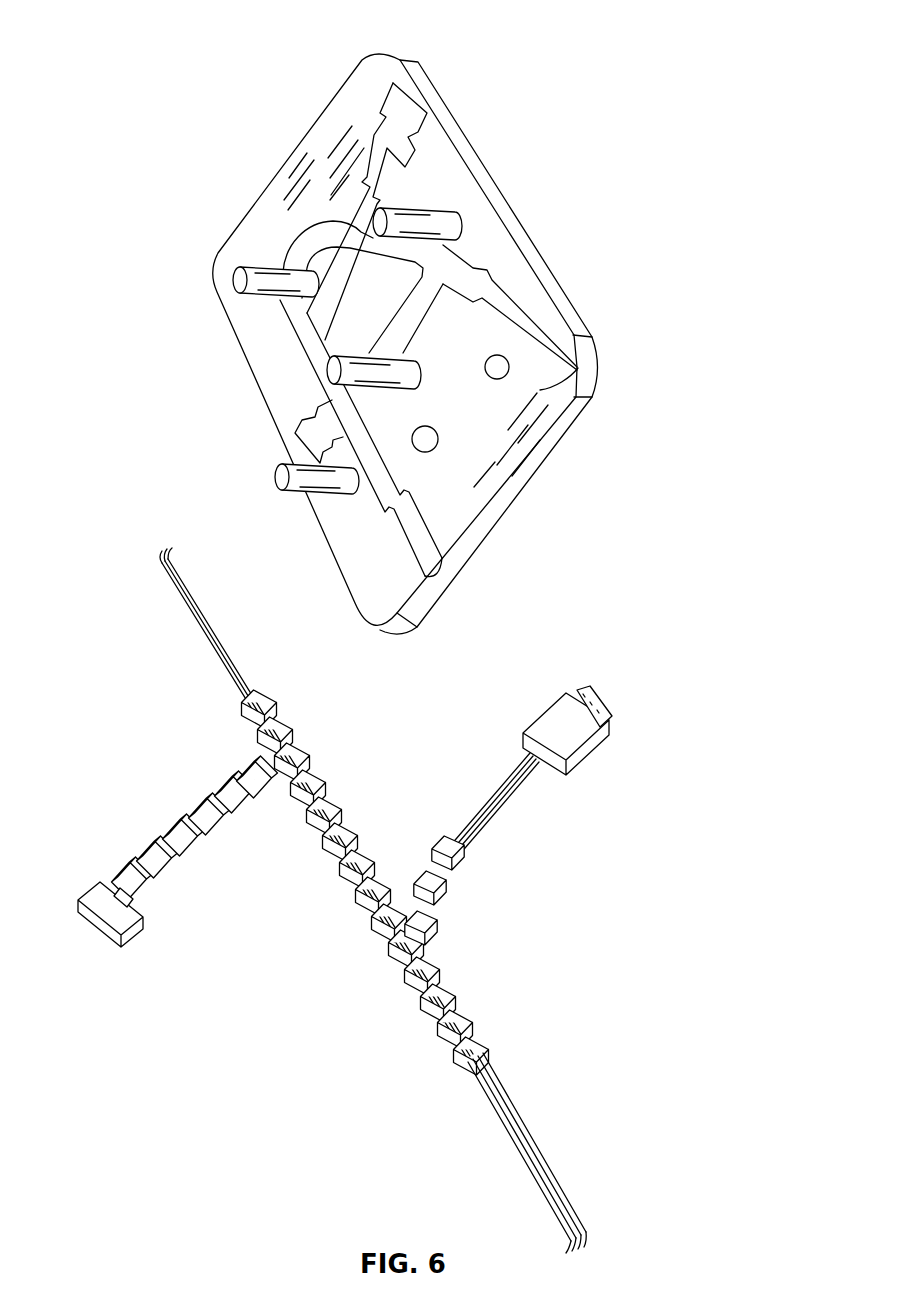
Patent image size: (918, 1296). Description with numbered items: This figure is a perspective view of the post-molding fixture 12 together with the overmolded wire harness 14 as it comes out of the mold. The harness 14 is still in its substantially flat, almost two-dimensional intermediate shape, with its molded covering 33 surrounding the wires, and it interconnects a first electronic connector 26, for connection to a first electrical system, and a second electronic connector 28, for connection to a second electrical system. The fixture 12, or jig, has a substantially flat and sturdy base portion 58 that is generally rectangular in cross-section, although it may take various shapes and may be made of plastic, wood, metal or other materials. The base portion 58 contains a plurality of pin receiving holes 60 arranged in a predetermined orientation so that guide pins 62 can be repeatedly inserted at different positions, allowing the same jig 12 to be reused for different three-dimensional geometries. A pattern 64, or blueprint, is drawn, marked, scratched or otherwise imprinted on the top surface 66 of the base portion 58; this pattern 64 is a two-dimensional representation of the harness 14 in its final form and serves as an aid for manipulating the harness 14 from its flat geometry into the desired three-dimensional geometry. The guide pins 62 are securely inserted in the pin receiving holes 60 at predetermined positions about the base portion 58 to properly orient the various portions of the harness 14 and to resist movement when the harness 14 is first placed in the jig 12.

The post-molding fixture 12 is at (245, 30).
The harness 14 is at (526, 1124).
The first electronic connector 26 is at (100, 896).
The second electronic connector 28 is at (560, 714).
The covering 33 is at (305, 815).
The base portion 58 is at (430, 344).
The pin receiving holes 60 is at (493, 379).
The guide pins 62 is at (310, 480).
The pattern 64 is at (470, 268).
The top surface 66 is at (578, 368).